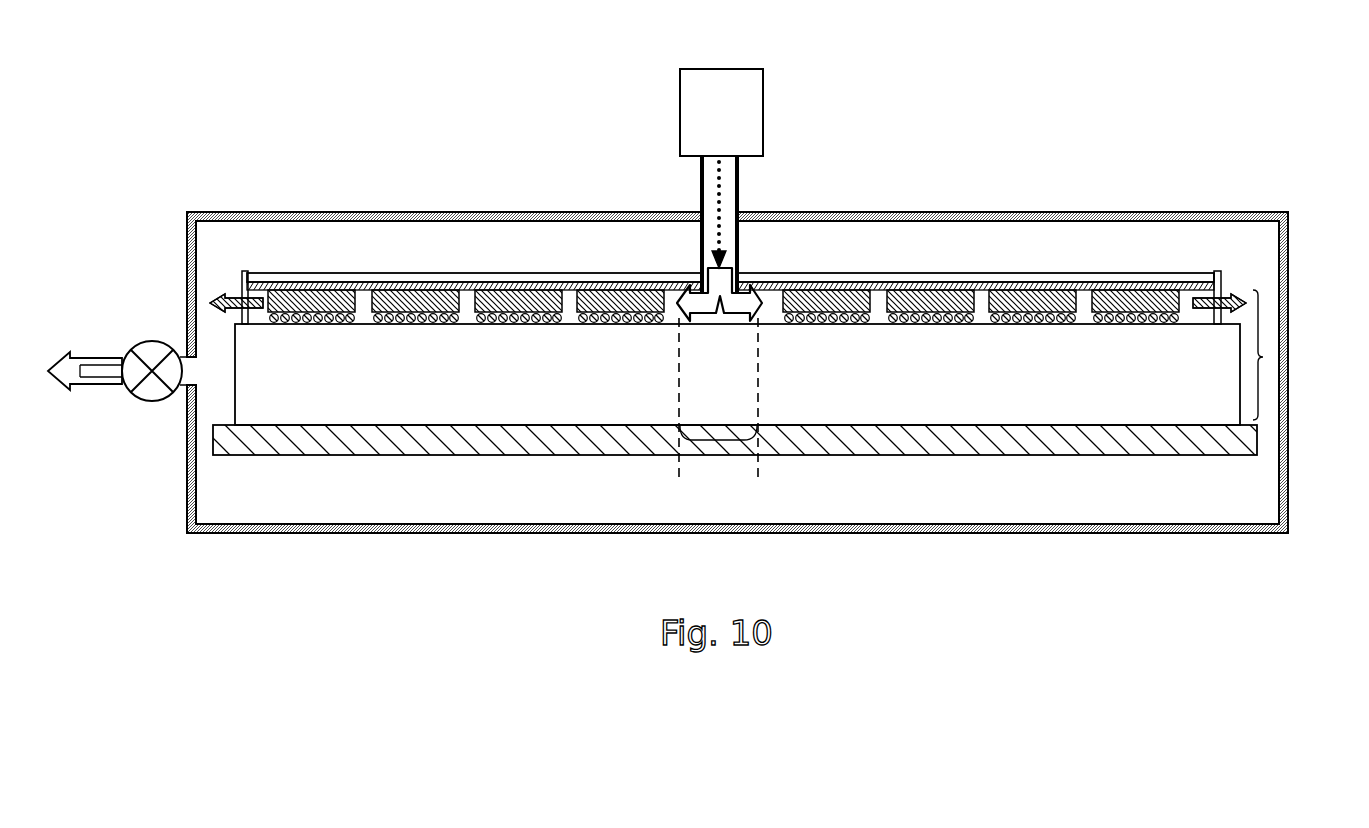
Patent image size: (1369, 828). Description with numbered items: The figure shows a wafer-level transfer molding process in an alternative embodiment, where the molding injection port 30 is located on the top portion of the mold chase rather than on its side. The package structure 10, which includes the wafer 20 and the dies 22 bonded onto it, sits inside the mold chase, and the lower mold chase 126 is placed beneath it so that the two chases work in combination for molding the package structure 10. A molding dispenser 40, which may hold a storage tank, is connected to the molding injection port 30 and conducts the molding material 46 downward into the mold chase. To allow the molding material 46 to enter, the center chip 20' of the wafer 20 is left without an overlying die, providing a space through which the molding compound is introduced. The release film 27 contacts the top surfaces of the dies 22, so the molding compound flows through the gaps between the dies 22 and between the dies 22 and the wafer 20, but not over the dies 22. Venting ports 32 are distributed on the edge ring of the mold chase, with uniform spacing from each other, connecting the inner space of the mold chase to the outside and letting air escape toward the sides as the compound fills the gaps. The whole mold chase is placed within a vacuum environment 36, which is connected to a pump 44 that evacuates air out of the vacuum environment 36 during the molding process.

The package structure 10 is at (1263, 357).
The wafer 20 is at (737, 374).
The center chip 20' is at (718, 414).
The dies 22 is at (540, 289).
The release film 27 is at (1160, 282).
The molding injection port 30 is at (699, 262).
The venting ports 32 is at (240, 301).
The vacuum environment 36 is at (1289, 483).
The molding dispenser 40 is at (735, 124).
The pump 44 is at (142, 401).
The molding material 46 is at (752, 293).
The lower mold chase 126 is at (873, 456).